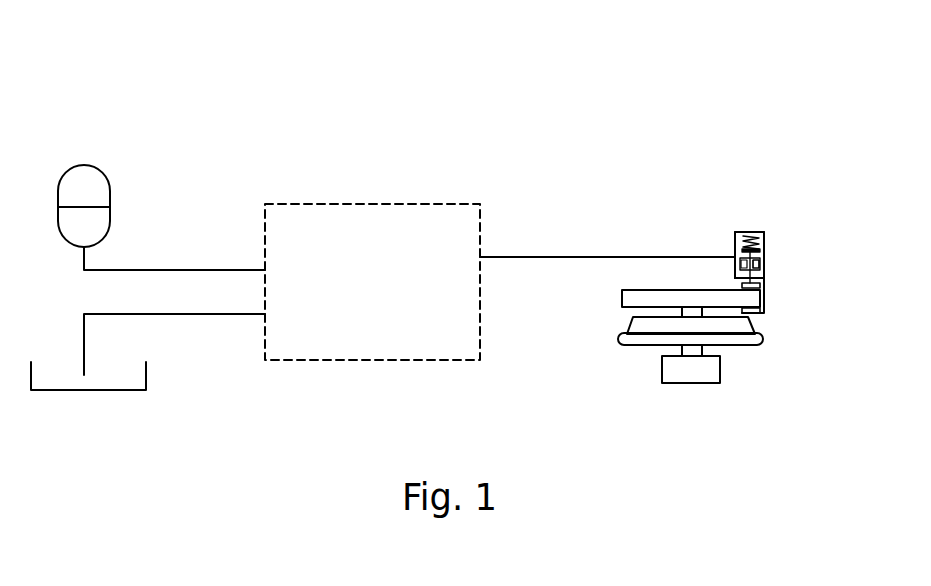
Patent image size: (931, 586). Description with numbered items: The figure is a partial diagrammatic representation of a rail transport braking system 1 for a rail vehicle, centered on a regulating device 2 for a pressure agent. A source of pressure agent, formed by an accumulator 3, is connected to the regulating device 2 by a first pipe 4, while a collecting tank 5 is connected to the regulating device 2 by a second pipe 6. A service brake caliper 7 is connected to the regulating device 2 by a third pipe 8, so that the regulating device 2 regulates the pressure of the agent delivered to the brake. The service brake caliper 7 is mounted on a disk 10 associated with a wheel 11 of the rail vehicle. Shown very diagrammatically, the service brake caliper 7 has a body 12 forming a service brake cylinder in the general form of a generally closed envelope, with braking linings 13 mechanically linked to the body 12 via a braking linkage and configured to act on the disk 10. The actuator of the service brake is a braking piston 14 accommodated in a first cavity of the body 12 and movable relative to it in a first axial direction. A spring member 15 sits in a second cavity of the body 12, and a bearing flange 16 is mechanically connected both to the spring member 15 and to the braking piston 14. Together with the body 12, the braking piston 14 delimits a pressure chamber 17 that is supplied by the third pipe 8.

The rail transport braking system 1 is at (566, 92).
The regulating device 2 is at (372, 282).
The accumulator 3 is at (84, 165).
The first pipe 4 is at (192, 270).
The collecting tank 5 is at (55, 390).
The second pipe 6 is at (212, 314).
The service brake caliper 7 is at (772, 220).
The third pipe 8 is at (527, 257).
The disk 10 is at (622, 297).
The wheel 11 is at (618, 340).
The body 12 is at (740, 268).
The braking linings 13 is at (762, 312).
The braking piston 14 is at (760, 258).
The spring member 15 is at (752, 232).
The bearing flange 16 is at (735, 248).
The pressure chamber 17 is at (764, 275).